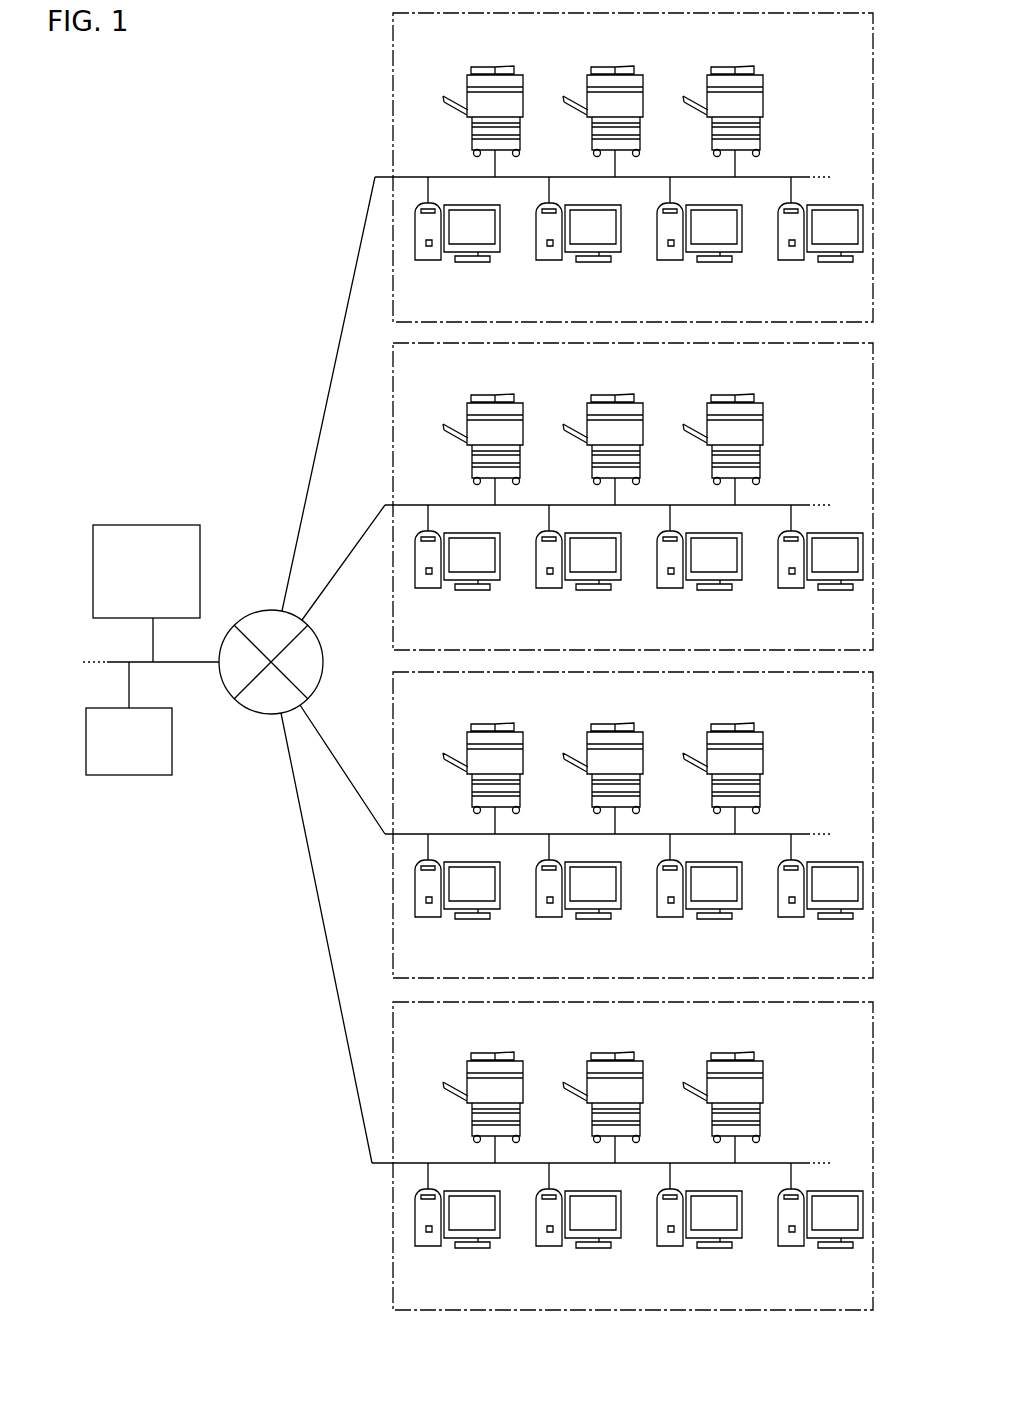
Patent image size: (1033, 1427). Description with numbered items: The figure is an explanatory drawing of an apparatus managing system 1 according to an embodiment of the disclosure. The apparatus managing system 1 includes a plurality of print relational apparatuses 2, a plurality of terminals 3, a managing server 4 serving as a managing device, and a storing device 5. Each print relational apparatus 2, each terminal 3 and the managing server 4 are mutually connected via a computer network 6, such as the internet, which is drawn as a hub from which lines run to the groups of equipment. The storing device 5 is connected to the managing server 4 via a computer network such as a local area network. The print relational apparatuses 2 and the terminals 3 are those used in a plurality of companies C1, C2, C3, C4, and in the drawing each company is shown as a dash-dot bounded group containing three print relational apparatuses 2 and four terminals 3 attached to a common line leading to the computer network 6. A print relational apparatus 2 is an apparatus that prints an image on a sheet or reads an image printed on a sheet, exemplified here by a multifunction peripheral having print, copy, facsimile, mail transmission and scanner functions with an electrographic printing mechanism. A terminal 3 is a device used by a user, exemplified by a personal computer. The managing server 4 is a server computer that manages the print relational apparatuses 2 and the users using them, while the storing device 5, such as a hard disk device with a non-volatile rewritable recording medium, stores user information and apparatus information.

The apparatus managing system 1 is at (186, 396).
The print relational apparatus 2 is at (603, 592).
The terminal 3 is at (639, 734).
The managing server 4 is at (150, 524).
The storing device 5 is at (129, 776).
The computer network 6 is at (256, 614).
The company C1 is at (874, 165).
The company C2 is at (874, 493).
The company C3 is at (874, 822).
The company C4 is at (874, 1151).